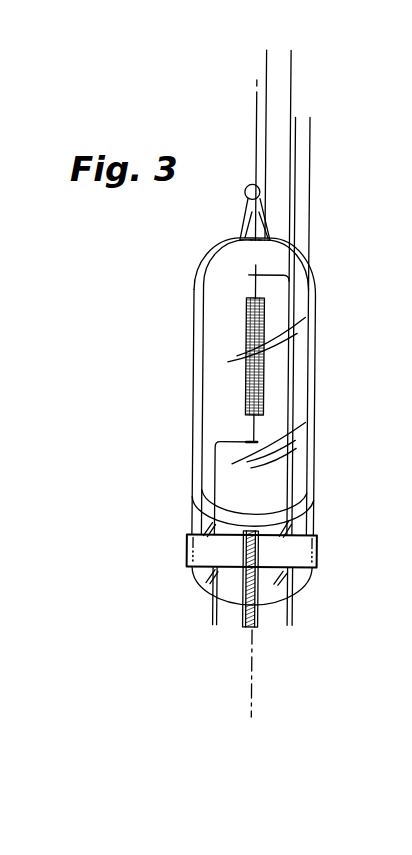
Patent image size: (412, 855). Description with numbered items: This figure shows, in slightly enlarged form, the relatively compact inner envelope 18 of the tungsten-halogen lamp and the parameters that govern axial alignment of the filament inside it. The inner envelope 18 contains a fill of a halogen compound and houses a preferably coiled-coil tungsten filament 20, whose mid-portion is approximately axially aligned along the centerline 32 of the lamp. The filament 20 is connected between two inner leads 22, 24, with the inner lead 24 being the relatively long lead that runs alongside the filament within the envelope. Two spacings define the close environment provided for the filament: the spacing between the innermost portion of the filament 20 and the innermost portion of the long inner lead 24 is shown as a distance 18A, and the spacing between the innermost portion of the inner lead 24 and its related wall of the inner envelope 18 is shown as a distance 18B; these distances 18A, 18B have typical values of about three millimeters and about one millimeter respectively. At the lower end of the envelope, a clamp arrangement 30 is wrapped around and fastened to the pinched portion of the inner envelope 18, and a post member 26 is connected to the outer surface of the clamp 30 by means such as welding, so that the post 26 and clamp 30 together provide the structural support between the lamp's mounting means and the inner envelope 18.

The inner envelope 18 is at (316, 287).
The distance 18A is at (235, 55).
The distance 18B is at (265, 125).
The filament 20 is at (246, 331).
The inner lead 22 is at (215, 613).
The inner lead 24 is at (292, 627).
The post member 26 is at (245, 627).
The clamp arrangement 30 is at (318, 540).
The centerline 32 is at (253, 112).